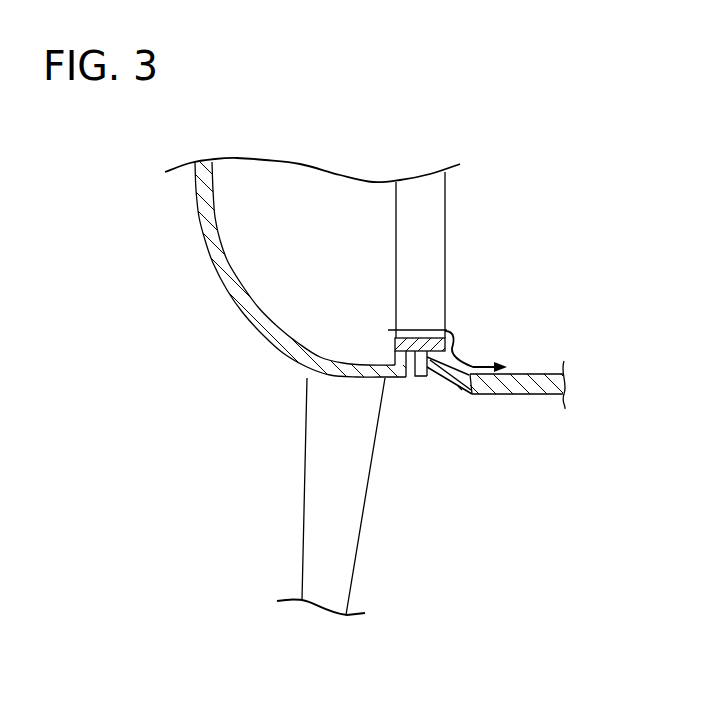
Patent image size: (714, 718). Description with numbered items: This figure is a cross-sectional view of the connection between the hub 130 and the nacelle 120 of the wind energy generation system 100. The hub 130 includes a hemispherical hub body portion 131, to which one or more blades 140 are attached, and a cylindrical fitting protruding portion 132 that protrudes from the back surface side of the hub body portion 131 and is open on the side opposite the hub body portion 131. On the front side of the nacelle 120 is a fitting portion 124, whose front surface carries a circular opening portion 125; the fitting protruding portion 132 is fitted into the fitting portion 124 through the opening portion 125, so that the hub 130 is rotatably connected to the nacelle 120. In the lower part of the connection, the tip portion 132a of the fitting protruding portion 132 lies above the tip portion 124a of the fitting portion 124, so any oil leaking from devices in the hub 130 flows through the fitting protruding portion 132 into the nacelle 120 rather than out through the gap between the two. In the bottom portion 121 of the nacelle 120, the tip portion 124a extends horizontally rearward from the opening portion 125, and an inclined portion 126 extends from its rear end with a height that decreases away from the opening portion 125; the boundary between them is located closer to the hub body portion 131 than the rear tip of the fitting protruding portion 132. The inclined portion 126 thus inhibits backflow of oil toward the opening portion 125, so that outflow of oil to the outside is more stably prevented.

The wind energy generation system 100 is at (496, 147).
The nacelle 120 is at (537, 373).
The bottom portion 121 is at (543, 395).
The fitting portion 124 is at (482, 405).
The tip portion 124a is at (428, 376).
The opening portion 125 is at (394, 351).
The inclined portion 126 is at (458, 392).
The hub 130 is at (216, 268).
The hub body portion 131 is at (197, 210).
The fitting protruding portion 132 is at (445, 208).
The tip portion 132a is at (415, 378).
The blade 140 is at (303, 477).